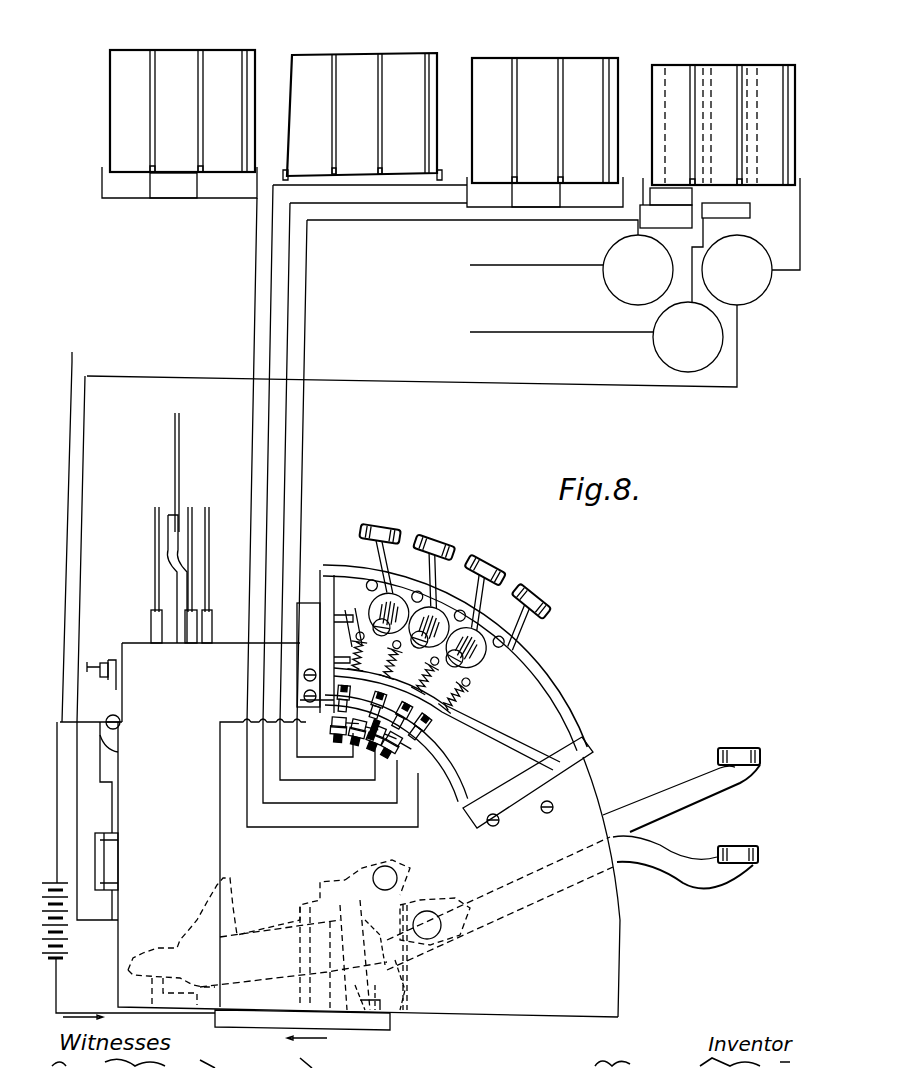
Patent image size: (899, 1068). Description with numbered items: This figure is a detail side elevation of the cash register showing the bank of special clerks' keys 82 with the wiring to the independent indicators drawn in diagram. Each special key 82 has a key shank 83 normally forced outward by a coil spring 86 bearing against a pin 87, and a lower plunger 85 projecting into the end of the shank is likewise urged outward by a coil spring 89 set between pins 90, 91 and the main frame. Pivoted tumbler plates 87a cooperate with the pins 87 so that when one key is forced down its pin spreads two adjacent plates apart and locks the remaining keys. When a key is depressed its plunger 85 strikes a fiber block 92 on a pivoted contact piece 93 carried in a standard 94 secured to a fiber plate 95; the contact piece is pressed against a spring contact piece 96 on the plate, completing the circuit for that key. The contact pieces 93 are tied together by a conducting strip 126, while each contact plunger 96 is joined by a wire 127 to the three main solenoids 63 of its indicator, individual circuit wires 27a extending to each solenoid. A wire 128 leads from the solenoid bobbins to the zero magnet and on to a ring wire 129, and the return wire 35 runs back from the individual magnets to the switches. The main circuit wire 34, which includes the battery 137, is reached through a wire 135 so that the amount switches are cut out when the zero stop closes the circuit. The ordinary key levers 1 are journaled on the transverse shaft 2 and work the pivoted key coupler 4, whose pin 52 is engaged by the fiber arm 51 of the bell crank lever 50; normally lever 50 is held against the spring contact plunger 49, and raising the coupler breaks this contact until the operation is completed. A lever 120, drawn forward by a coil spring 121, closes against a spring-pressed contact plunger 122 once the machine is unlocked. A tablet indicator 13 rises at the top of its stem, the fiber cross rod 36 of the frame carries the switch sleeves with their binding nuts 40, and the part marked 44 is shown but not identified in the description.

The main solenoid 63 is at (652, 126).
The individual circuit wire 27a is at (758, 216).
The wire 128 is at (247, 180).
The wire 127 is at (257, 247).
The return wire 35 is at (545, 332).
The ring wire 129 is at (687, 303).
The wire 135 is at (72, 368).
The tablet indicator 13 is at (180, 455).
The fiber cross rod 36 is at (122, 676).
The nut 40 is at (102, 662).
The switch arm 44 is at (110, 662).
The main circuit wire 34 is at (60, 740).
The battery 137 is at (62, 955).
The coil spring 86 is at (360, 580).
The fiber plate 95 is at (452, 765).
The special key 82 is at (395, 533).
The key shank 83 is at (380, 562).
The pin 87 is at (415, 600).
The tumbler plate 87a is at (478, 660).
The coil spring 89 is at (490, 678).
The lower plunger 85 is at (362, 645).
The pin 90 is at (360, 640).
The fiber block 92 is at (440, 700).
The pivoted contact piece 93 is at (445, 712).
The pin 91 is at (455, 728).
The standard 94 is at (300, 700).
The spring contact piece 96 is at (345, 737).
The conducting strip 126 is at (420, 740).
The key lever 1 is at (683, 803).
The lever 120 is at (400, 880).
The transverse shaft 2 is at (440, 924).
The pin 52 is at (303, 915).
The fiber arm 51 is at (295, 948).
The bell crank lever 50 is at (308, 990).
The spring contact plunger 49 is at (358, 988).
The key coupler 4 is at (318, 895).
The coil spring 121 is at (395, 940).
The spring-pressed contact plunger 122 is at (400, 958).